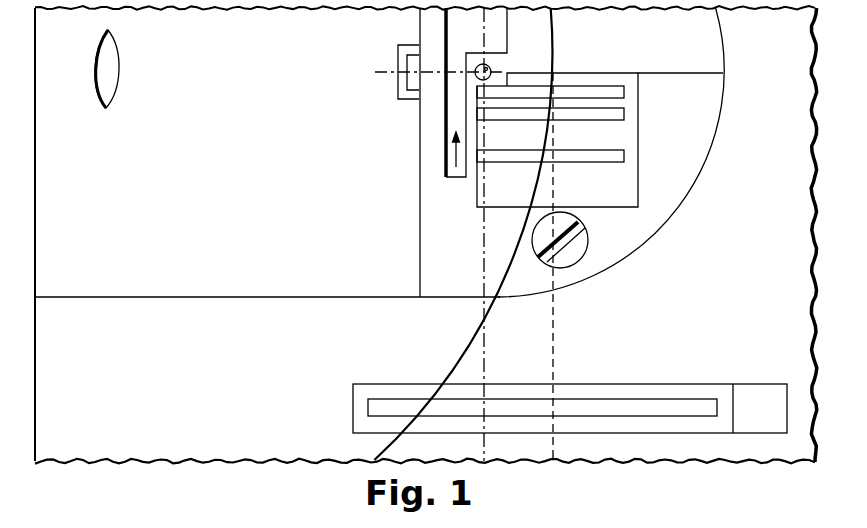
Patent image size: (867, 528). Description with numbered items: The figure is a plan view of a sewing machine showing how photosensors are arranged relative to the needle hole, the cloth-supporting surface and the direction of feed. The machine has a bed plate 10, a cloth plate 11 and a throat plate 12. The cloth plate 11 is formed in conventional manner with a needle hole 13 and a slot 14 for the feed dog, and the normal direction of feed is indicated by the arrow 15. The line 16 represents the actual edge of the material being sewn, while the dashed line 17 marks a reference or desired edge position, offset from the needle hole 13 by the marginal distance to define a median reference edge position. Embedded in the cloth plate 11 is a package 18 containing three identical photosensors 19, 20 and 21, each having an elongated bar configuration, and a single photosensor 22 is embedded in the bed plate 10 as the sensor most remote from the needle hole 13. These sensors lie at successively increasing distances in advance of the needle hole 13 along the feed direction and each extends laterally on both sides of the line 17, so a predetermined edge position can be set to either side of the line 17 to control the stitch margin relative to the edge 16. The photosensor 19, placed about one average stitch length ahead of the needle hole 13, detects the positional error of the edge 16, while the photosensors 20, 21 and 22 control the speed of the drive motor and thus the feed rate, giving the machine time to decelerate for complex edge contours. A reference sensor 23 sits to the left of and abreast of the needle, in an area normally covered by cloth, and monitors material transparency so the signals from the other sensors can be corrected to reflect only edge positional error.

The bed plate 10 is at (702, 280).
The cloth plate 11 is at (668, 57).
The throat plate 12 is at (233, 180).
The needle hole 13 is at (489, 66).
The slot for the feed dog 14 is at (446, 53).
The arrow 15 is at (456, 153).
The line indicating actual edge of material 16 is at (489, 309).
The dashed line indicating reference edge position 17 is at (555, 325).
The package 18 is at (638, 138).
The photosensor 19 is at (588, 94).
The photosensor 20 is at (596, 115).
The photosensor 21 is at (596, 159).
The photosensor 22 is at (665, 408).
The reference sensor 23 is at (411, 61).